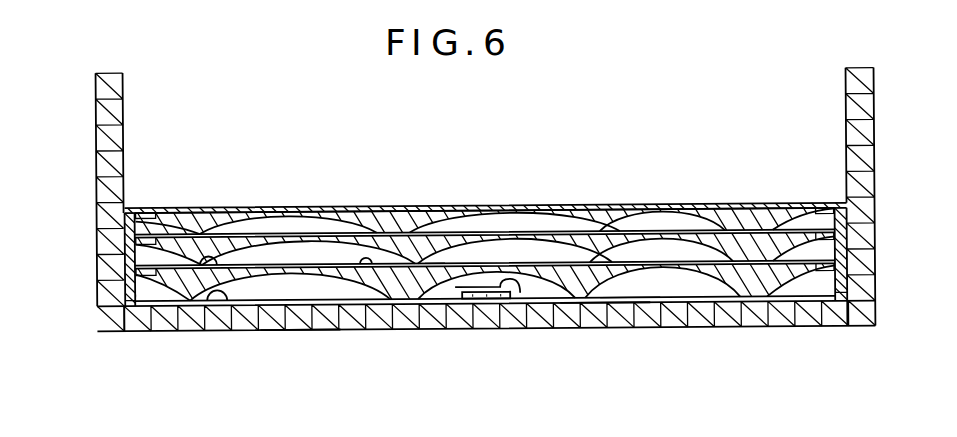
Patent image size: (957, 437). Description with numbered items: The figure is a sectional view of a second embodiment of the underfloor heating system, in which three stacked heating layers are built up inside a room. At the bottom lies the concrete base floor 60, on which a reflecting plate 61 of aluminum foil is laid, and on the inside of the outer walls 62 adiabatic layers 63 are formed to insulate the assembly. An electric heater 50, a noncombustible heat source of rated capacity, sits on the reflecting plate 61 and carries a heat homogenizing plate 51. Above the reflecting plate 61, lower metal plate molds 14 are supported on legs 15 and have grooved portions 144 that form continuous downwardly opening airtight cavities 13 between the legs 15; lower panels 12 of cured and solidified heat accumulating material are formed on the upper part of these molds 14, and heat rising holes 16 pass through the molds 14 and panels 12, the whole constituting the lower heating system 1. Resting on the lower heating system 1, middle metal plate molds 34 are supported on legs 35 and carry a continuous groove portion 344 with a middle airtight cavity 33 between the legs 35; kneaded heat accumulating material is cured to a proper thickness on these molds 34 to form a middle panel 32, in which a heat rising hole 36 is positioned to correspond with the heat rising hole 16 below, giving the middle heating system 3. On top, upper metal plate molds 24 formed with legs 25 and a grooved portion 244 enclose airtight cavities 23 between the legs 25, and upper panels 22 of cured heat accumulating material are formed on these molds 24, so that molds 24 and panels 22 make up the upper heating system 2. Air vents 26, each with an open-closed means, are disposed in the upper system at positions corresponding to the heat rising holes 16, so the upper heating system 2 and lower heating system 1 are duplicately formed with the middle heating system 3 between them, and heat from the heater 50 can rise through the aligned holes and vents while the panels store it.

The lower heating system 1 is at (532, 247).
The upper heating system 2 is at (460, 200).
The middle heating system 3 is at (500, 217).
The lower panel 12 is at (376, 264).
The airtight cavity 13 is at (286, 300).
The lower metal plate mold 14 is at (806, 274).
The leg 15 is at (605, 304).
The heat rising hole 16 is at (130, 303).
The upper panel 22 is at (408, 212).
The airtight cavity 23 is at (312, 222).
The upper metal plate mold 24 is at (367, 266).
The leg 25 is at (700, 299).
The air vent 26 is at (152, 212).
The middle panel 32 is at (372, 233).
The middle airtight cavity 33 is at (288, 209).
The middle metal plate mold 34 is at (434, 263).
The leg 35 is at (627, 299).
The heat rising hole 36 is at (126, 266).
The electric heater 50 is at (482, 300).
The heat homogenizing plate 51 is at (518, 296).
The concrete base floor 60 is at (323, 330).
The reflecting plate 61 is at (298, 330).
The outer wall 62 is at (98, 218).
The adiabatic layer 63 is at (142, 212).
The grooved portion 144 is at (220, 300).
The grooved portion 244 is at (210, 230).
The middle bump 344 is at (195, 263).